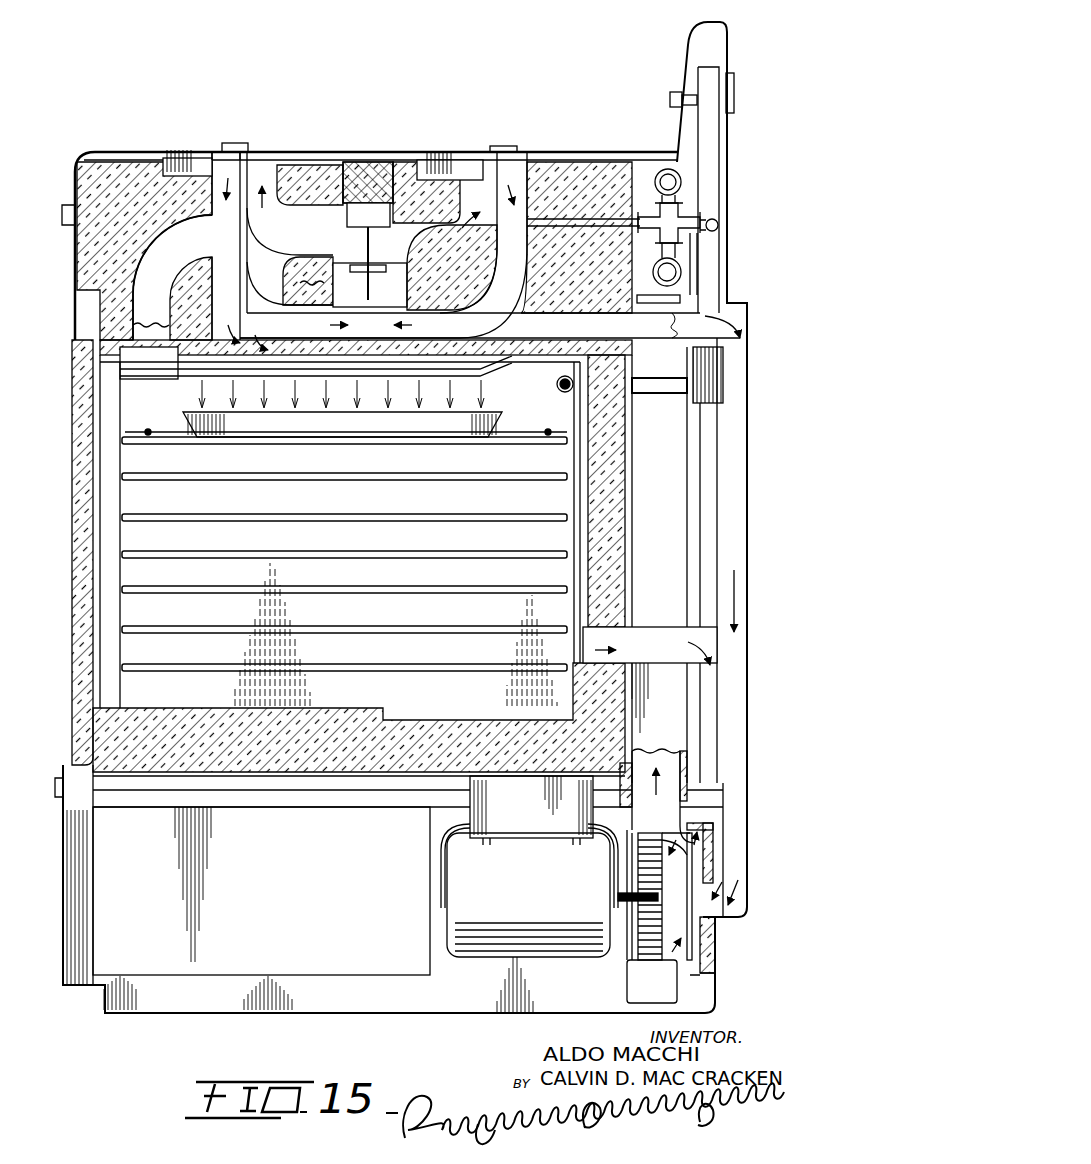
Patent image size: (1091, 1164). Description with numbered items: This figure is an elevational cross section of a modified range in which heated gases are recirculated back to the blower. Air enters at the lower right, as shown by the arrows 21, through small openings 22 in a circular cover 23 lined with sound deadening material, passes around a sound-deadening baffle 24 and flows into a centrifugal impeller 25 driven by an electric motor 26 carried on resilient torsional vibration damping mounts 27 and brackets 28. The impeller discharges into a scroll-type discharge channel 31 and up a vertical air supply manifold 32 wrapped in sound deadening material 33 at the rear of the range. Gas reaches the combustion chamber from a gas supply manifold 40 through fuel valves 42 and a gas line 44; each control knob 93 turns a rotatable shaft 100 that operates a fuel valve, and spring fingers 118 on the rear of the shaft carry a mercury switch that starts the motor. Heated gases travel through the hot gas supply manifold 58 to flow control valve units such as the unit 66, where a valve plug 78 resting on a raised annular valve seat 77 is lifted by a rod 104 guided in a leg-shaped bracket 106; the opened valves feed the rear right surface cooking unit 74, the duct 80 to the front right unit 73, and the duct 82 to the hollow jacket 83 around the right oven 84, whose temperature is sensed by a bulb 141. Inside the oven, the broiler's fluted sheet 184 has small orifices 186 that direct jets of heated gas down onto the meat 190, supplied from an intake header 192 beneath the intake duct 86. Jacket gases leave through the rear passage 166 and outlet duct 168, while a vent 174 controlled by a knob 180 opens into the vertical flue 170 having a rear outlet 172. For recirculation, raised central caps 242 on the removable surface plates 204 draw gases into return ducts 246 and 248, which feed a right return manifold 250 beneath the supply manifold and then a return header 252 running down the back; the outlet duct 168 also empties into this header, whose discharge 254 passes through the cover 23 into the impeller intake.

The arrows 21 is at (712, 938).
The small openings 22 is at (713, 855).
The circular cover 23 is at (707, 976).
The sound-deadening baffle 24 is at (691, 873).
The centrifugal type impeller 25 is at (648, 958).
The electric motor 26 is at (545, 904).
The resilient torsional vibration damping mounts 27 is at (432, 918).
The brackets 28 is at (543, 817).
The scroll-type discharge channel 31 is at (665, 989).
The vertical air supply manifold 32 is at (670, 549).
The sound deadening material 33 is at (688, 775).
The gas supply manifold 40 is at (684, 270).
The fuel valves 42 is at (682, 213).
The gas line 44 is at (682, 183).
The hot gas supply manifold 58 is at (390, 286).
The hot gas flow control valve unit 66 is at (372, 200).
The front right surface cooking unit 73 is at (249, 147).
The rear right surface cooking unit 74 is at (503, 147).
The raised annular valve seat 77 is at (388, 269).
The valve plug 78 is at (381, 256).
The duct 80 is at (311, 245).
The duct 82 is at (277, 277).
The hollow jacket 83 is at (236, 345).
The right oven 84 is at (348, 549).
The intake duct 86 is at (165, 290).
The control knob 93 is at (62, 209).
The rotatable shaft 100 is at (83, 196).
The vertically movable rod 104 is at (307, 281).
The leg-shaped bracket 106 is at (386, 294).
The spring fingers 118 is at (719, 223).
The bulb 141 is at (565, 392).
The rear passage 166 is at (590, 574).
The outlet duct 168 is at (640, 673).
The vertical flue 170 is at (713, 143).
The rear outlet 172 is at (734, 90).
The vent 174 is at (640, 394).
The knob 180 is at (669, 100).
The fluted or scalloped sheet 184 is at (490, 374).
The small orifices 186 is at (471, 386).
The meat 190 is at (333, 426).
The intake header 192 is at (163, 380).
The surface plate 204 is at (300, 151).
The raised central cap 242 is at (230, 143).
The return duct 246 is at (528, 265).
The return duct 248 is at (213, 243).
The right return manifold 250 is at (299, 290).
The return header 252 is at (607, 311).
The discharge 254 is at (738, 901).